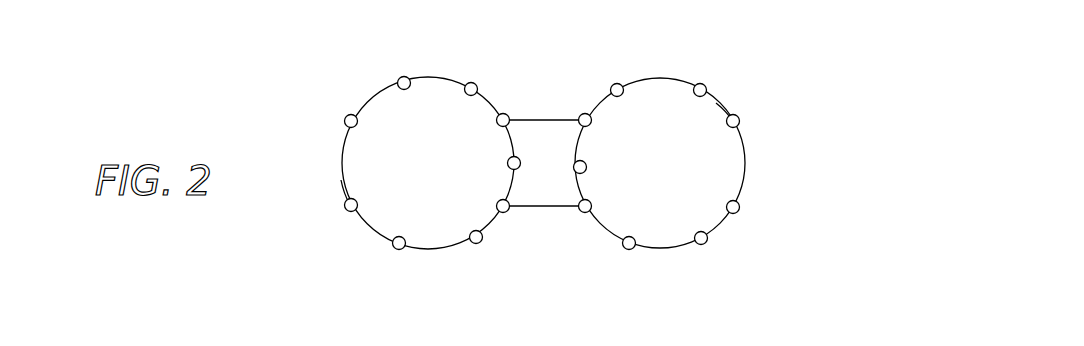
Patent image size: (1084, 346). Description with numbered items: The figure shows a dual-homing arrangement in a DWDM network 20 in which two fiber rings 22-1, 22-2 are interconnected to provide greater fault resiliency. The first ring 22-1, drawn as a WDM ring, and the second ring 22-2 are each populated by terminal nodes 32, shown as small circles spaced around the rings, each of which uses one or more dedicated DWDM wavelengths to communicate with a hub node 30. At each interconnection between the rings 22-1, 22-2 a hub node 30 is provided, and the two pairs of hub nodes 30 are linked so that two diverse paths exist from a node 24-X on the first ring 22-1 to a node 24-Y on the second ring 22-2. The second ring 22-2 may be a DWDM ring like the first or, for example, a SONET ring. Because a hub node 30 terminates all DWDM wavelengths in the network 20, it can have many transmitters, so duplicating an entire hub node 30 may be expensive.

The DWDM network 20 is at (559, 64).
The first ring 22-1 is at (338, 165).
The second ring 22-2 is at (746, 164).
The node on first ring 24-X is at (343, 215).
The node on second ring 24-Y is at (742, 106).
The hub node 30 is at (508, 112).
The terminal node 32 is at (404, 76).